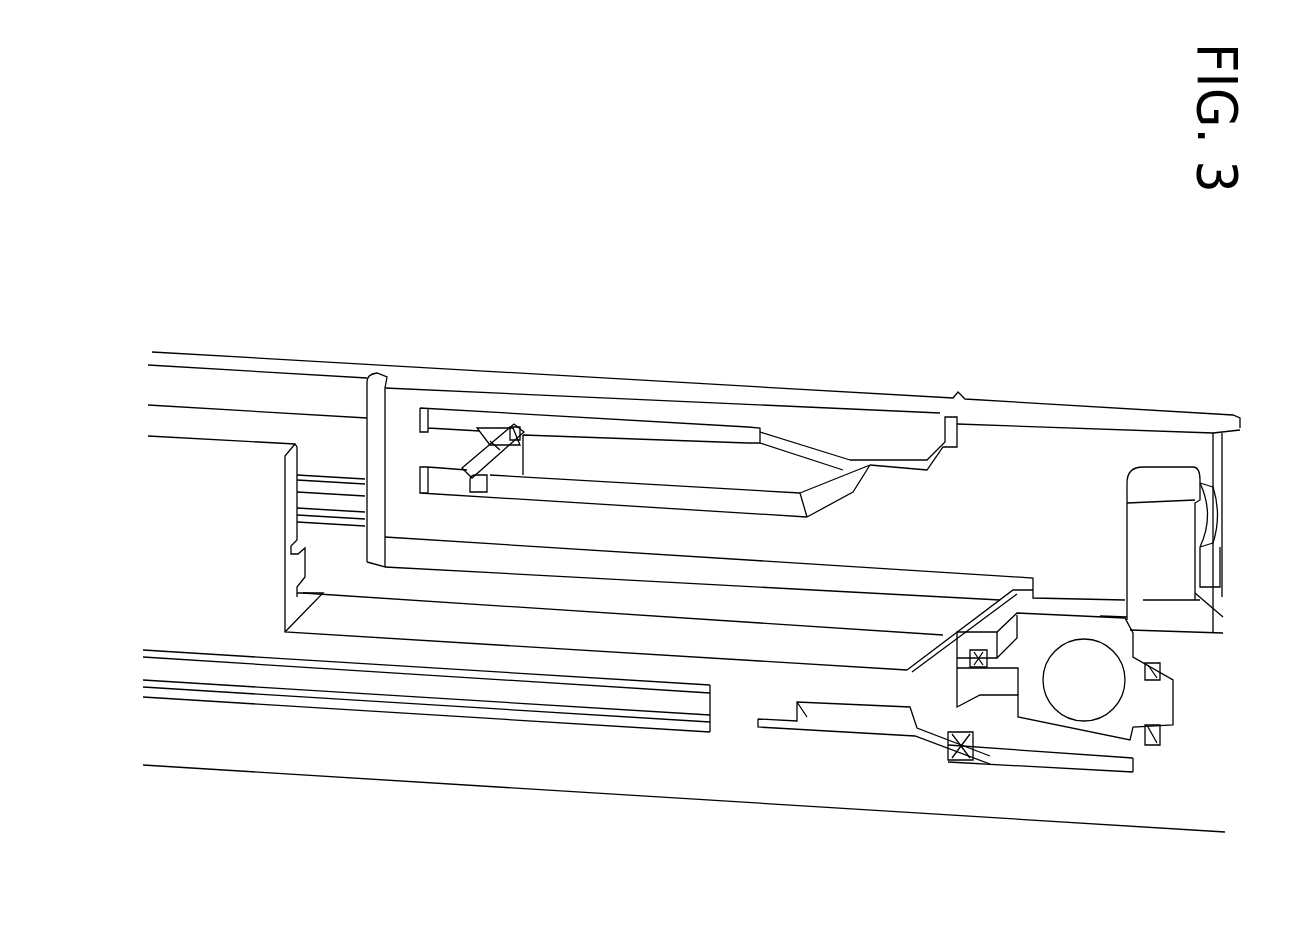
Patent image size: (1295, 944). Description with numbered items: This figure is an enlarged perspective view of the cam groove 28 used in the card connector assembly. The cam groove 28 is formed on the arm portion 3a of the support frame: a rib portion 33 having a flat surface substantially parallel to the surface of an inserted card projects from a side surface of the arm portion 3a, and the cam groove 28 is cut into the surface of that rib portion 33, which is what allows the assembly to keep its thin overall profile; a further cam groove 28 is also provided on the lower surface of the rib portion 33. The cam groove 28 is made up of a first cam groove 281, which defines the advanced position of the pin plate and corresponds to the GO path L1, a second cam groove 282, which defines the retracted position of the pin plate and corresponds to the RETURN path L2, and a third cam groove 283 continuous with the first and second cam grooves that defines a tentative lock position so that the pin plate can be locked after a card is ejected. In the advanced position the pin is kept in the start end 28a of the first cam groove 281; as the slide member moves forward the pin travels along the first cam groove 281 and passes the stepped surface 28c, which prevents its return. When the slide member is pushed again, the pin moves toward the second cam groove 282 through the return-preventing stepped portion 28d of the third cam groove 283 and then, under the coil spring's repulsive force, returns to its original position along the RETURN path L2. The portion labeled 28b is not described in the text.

The arm portion 3a is at (745, 780).
The rib portion 33 is at (427, 375).
The cam groove 28 is at (694, 409).
The first cam groove 281 is at (720, 490).
The second cam groove 282 is at (695, 433).
The third cam groove 283 is at (517, 430).
The start end portion 28a is at (917, 472).
The spring bent tip 28b is at (843, 500).
The stepped surface 28c is at (487, 493).
The return-preventing stepped portion 28d is at (484, 430).
The GO path L1 is at (595, 495).
The RETURN path L2 is at (750, 427).